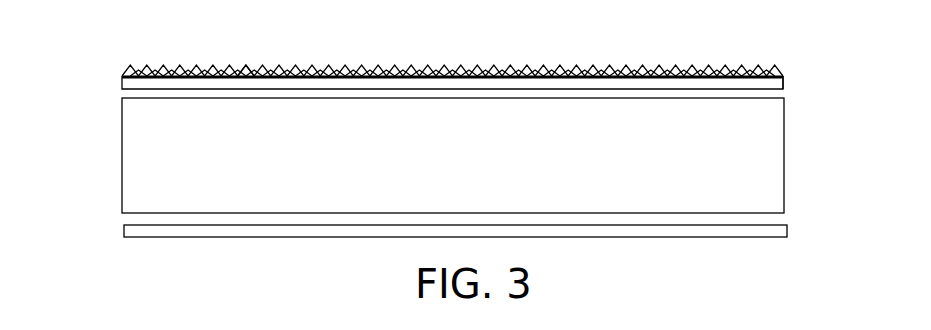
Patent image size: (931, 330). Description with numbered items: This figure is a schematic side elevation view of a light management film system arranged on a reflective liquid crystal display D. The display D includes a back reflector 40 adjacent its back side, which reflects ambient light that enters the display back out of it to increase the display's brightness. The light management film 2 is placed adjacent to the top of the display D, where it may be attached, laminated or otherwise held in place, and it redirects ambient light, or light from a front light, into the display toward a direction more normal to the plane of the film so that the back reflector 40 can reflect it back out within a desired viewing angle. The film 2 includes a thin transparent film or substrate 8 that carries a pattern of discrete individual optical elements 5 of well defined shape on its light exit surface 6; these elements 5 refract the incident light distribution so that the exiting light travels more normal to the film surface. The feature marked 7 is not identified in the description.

The light management film 2 is at (100, 80).
The discrete individual optical elements 5 is at (395, 72).
The light exit surface 6 is at (247, 68).
The film substrate 7 is at (243, 89).
The thin transparent film or substrate 8 is at (785, 82).
The reflective liquid crystal display D is at (783, 123).
The back reflector 40 is at (595, 226).